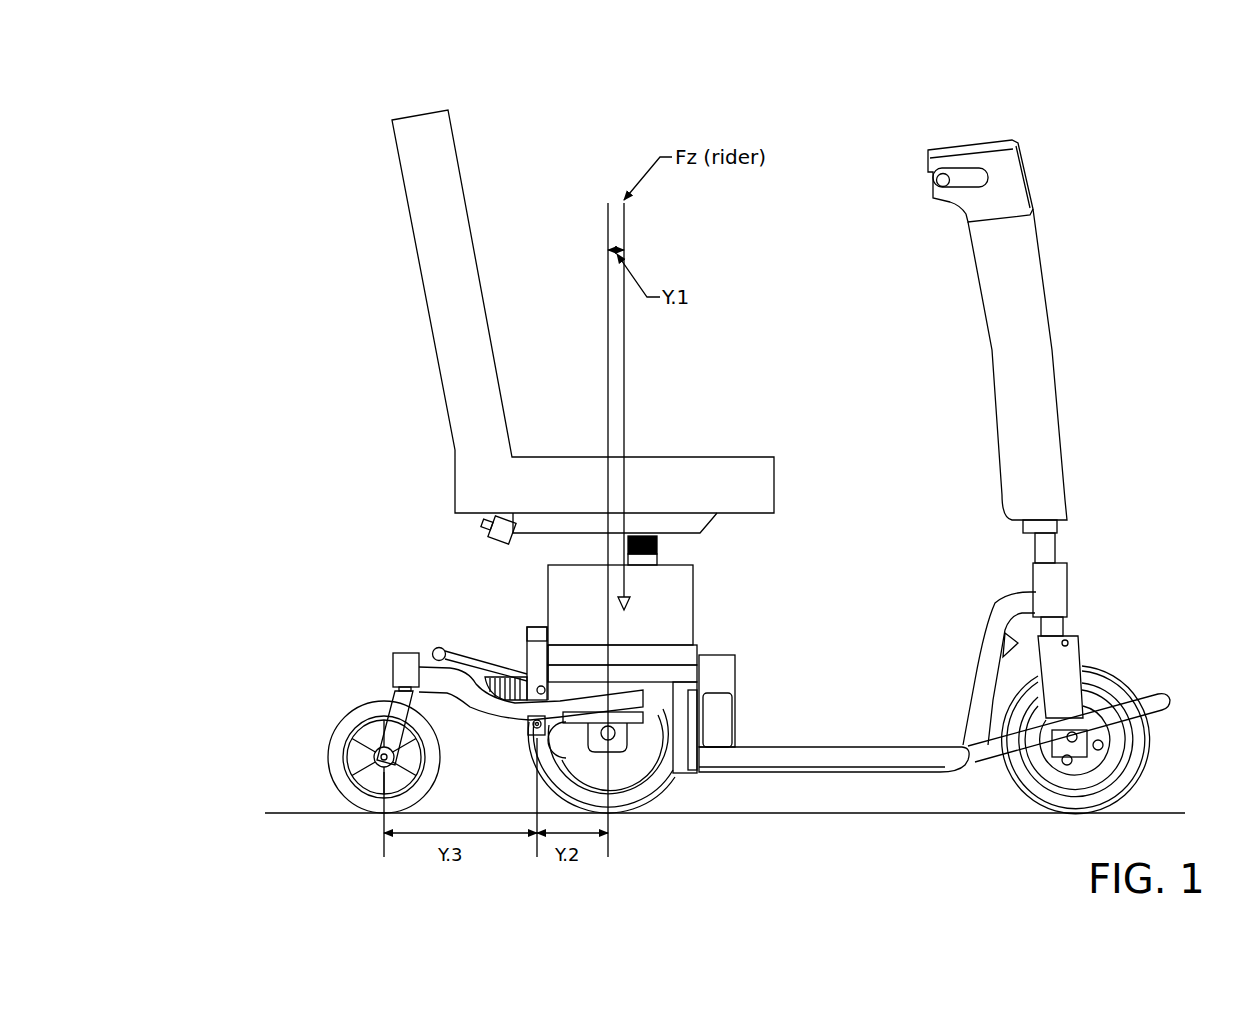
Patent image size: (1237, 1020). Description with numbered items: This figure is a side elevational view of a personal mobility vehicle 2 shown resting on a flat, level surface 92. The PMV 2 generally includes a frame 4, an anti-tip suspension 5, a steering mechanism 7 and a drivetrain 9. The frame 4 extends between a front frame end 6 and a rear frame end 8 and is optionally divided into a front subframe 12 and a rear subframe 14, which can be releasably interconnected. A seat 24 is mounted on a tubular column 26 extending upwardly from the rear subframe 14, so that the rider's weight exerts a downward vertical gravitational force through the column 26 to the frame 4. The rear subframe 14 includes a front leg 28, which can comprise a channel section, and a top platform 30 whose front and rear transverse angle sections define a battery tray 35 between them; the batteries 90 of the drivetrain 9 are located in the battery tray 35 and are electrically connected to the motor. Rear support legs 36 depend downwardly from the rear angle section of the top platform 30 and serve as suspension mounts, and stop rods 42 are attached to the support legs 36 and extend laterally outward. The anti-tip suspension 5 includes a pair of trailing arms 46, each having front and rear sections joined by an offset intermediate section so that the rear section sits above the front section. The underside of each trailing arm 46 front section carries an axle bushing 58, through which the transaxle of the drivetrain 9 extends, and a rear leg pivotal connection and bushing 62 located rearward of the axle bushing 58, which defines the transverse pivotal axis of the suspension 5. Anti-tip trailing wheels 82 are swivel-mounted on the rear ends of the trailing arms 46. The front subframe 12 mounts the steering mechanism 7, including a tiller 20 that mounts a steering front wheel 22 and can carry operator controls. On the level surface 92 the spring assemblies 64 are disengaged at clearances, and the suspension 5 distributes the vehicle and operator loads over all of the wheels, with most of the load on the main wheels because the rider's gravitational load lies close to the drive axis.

The personal mobility vehicle 2 is at (1106, 250).
The frame 4 is at (1151, 529).
The anti-tip suspension 5 is at (391, 651).
The front frame end 6 is at (1170, 713).
The steering mechanism 7 is at (1026, 140).
The rear frame end 8 is at (526, 662).
The drivetrain 9 is at (528, 762).
The front subframe 12 is at (1163, 688).
The rear subframe 14 is at (522, 637).
The tiller 20 is at (923, 147).
The steering front wheel 22 is at (1124, 666).
The seat 24 is at (777, 456).
The tubular column 26 is at (660, 540).
The front leg 28 is at (703, 674).
The top platform 30 is at (648, 641).
The battery tray 35 is at (678, 640).
The rear support legs 36 is at (532, 623).
The stop rods 42 is at (540, 683).
The trailing arms 46 is at (477, 708).
The axle bushing 58 is at (614, 740).
The rear leg pivotal connection and bushing 62 is at (530, 725).
The spring assemblies 64 is at (497, 675).
The anti-tip trailing wheels 82 is at (337, 720).
The batteries 90 is at (698, 567).
The level surface 92 is at (1185, 811).